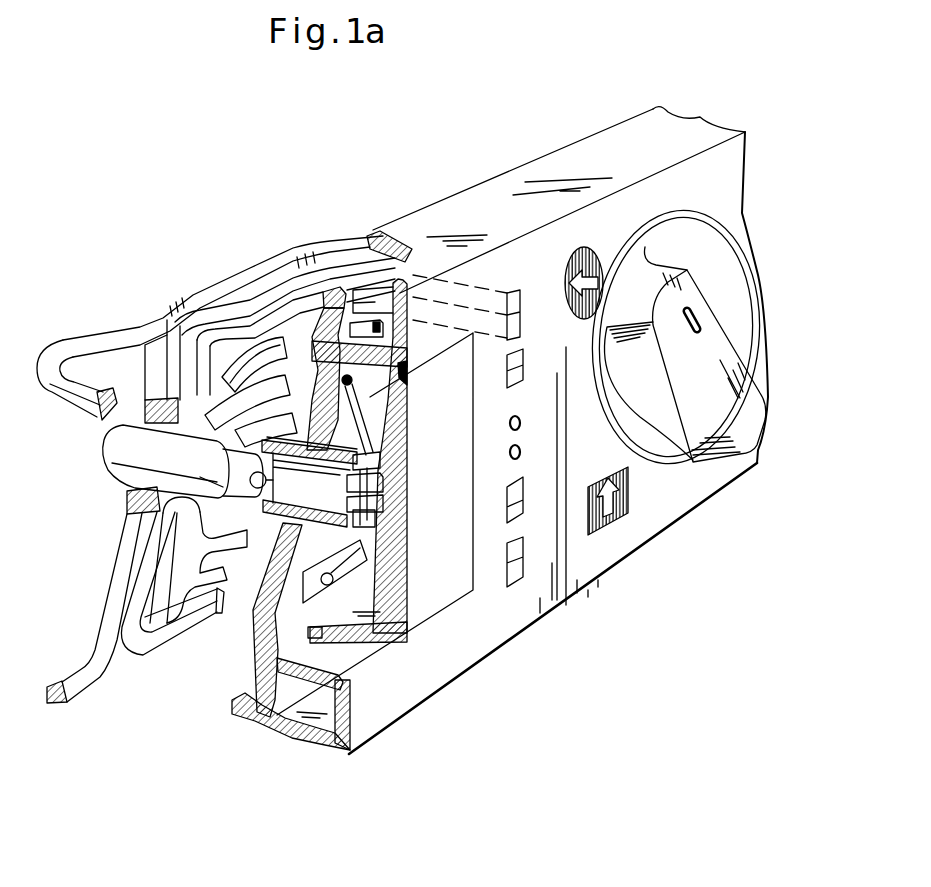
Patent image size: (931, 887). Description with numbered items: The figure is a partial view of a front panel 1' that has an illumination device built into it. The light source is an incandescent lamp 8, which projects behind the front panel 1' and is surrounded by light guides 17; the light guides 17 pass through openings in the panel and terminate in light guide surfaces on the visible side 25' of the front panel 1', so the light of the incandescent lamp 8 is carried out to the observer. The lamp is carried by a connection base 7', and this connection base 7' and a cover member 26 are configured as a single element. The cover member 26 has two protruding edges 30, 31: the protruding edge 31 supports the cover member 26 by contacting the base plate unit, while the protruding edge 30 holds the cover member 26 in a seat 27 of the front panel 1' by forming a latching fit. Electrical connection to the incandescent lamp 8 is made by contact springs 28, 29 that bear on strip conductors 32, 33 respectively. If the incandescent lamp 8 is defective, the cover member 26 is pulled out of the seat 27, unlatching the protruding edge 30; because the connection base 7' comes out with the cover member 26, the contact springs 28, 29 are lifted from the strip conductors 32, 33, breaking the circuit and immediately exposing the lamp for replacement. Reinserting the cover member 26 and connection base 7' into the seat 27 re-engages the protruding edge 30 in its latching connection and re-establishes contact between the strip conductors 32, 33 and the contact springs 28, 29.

The front panel 1' is at (558, 389).
The connection base 7' is at (313, 510).
The incandescent lamp 8 is at (123, 453).
The light guides 17 is at (173, 305).
The rotary knob 25' is at (676, 382).
The cover member 26 is at (435, 595).
The seat 27 is at (378, 295).
The contact spring 28 is at (363, 417).
The contact spring 29 is at (348, 560).
The protruding edge 30 is at (352, 325).
The protruding edge 31 is at (318, 638).
The strip conductor 32 is at (367, 385).
The strip conductor 33 is at (363, 558).